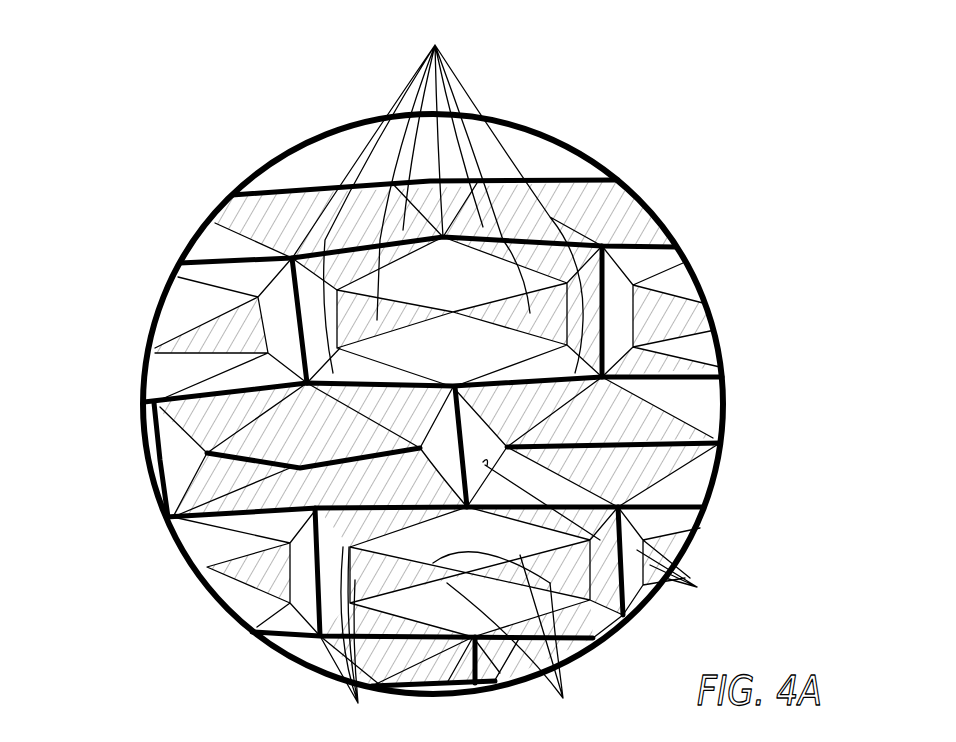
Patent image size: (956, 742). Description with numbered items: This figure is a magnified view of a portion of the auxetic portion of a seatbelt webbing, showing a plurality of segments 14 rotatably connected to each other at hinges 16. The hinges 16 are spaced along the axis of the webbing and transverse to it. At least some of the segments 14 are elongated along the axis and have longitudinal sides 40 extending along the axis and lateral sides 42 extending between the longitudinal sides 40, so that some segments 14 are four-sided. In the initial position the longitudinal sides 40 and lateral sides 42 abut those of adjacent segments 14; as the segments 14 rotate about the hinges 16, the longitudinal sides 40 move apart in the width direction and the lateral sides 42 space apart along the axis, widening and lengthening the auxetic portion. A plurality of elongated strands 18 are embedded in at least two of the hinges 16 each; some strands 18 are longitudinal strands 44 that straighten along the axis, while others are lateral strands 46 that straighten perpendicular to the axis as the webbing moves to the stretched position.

The segments 14 is at (447, 196).
The hinges 16 is at (345, 641).
The strands 18 is at (562, 180).
The longitudinal strands 44 is at (267, 488).
The lateral strands 46 is at (607, 317).
The longitudinal sides 40 is at (748, 483).
The lateral sides 42 is at (697, 587).